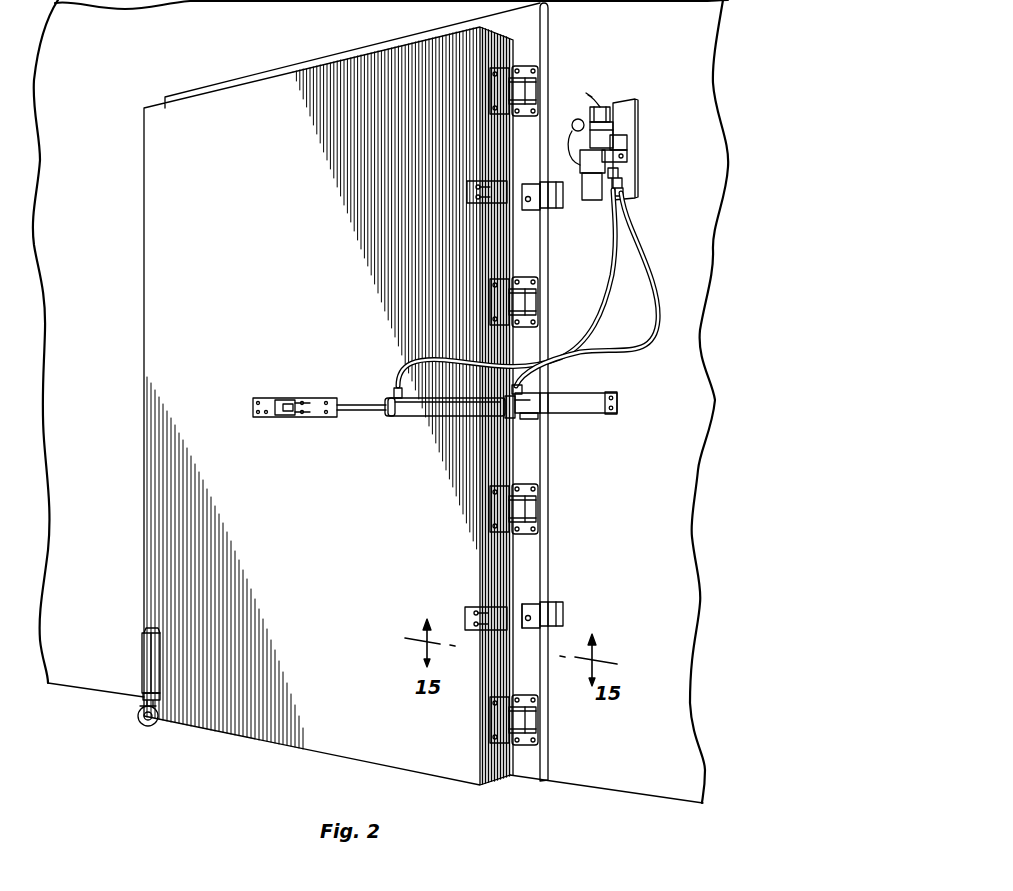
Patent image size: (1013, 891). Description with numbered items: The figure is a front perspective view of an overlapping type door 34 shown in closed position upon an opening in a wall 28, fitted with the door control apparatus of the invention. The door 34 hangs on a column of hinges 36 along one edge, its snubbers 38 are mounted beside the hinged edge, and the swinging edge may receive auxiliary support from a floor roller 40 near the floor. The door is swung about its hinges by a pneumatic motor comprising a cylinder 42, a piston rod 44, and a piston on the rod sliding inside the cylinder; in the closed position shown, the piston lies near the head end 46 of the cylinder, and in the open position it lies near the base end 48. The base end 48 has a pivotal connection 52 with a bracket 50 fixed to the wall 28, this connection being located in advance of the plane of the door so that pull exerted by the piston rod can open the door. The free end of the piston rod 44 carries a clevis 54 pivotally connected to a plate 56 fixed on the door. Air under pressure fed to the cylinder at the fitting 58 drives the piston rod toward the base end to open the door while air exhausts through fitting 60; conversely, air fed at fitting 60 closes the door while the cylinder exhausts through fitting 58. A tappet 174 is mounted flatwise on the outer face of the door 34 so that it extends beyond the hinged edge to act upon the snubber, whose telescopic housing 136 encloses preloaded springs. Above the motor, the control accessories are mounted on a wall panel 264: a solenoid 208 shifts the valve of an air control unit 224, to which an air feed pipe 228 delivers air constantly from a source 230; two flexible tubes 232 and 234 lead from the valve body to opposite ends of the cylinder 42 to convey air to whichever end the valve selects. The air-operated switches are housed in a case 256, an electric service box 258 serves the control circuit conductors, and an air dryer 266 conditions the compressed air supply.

The wall 28 is at (690, 630).
The door 34 is at (150, 368).
The hinges 36 is at (538, 84).
The snubbers 38 is at (535, 206).
The floor roller 40 is at (143, 733).
The cylinder 42 is at (421, 407).
The piston rod 44 is at (352, 411).
The head end 46 is at (388, 417).
The base end 48 is at (503, 408).
The bracket 50 is at (576, 409).
The pivotal connection 52 is at (530, 418).
The clevis 54 is at (289, 399).
The plate 56 is at (262, 418).
The fitting 58 is at (395, 392).
The fitting 60 is at (524, 389).
The telescopic housing 136 is at (546, 607).
The tappet 174 is at (470, 193).
The solenoid 208 is at (585, 172).
The air control unit 224 is at (630, 157).
The air feed pipe 228 is at (618, 121).
The source 230 is at (565, 141).
The flexible tube 232 is at (648, 269).
The flexible tube 234 is at (607, 268).
The case 256 is at (630, 140).
The electric service box 258 is at (533, 132).
The wall panel 264 is at (640, 108).
The air dryer 266 is at (605, 102).